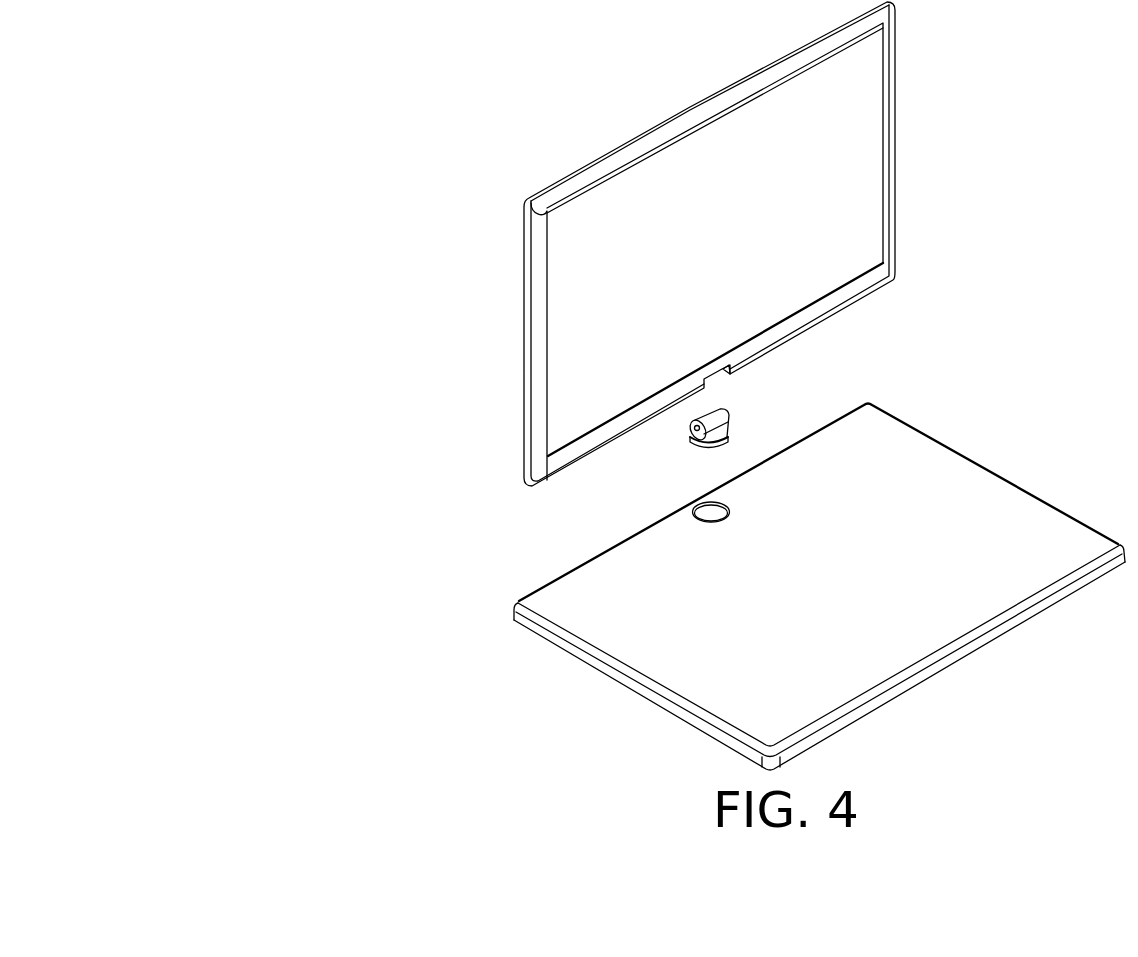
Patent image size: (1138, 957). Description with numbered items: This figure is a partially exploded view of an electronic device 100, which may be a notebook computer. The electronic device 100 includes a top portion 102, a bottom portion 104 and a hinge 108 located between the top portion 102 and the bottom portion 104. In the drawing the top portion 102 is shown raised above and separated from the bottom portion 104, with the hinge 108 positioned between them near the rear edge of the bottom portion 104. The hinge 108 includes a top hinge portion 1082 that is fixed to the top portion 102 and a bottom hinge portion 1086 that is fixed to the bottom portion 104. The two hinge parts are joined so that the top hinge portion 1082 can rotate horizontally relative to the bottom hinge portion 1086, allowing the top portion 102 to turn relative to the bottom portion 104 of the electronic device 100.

The electronic device 100 is at (352, 99).
The top portion 102 is at (853, 135).
The bottom portion 104 is at (952, 497).
The hinge 108 is at (752, 419).
The top hinge portion 1082 is at (693, 423).
The bottom hinge portion 1086 is at (703, 450).